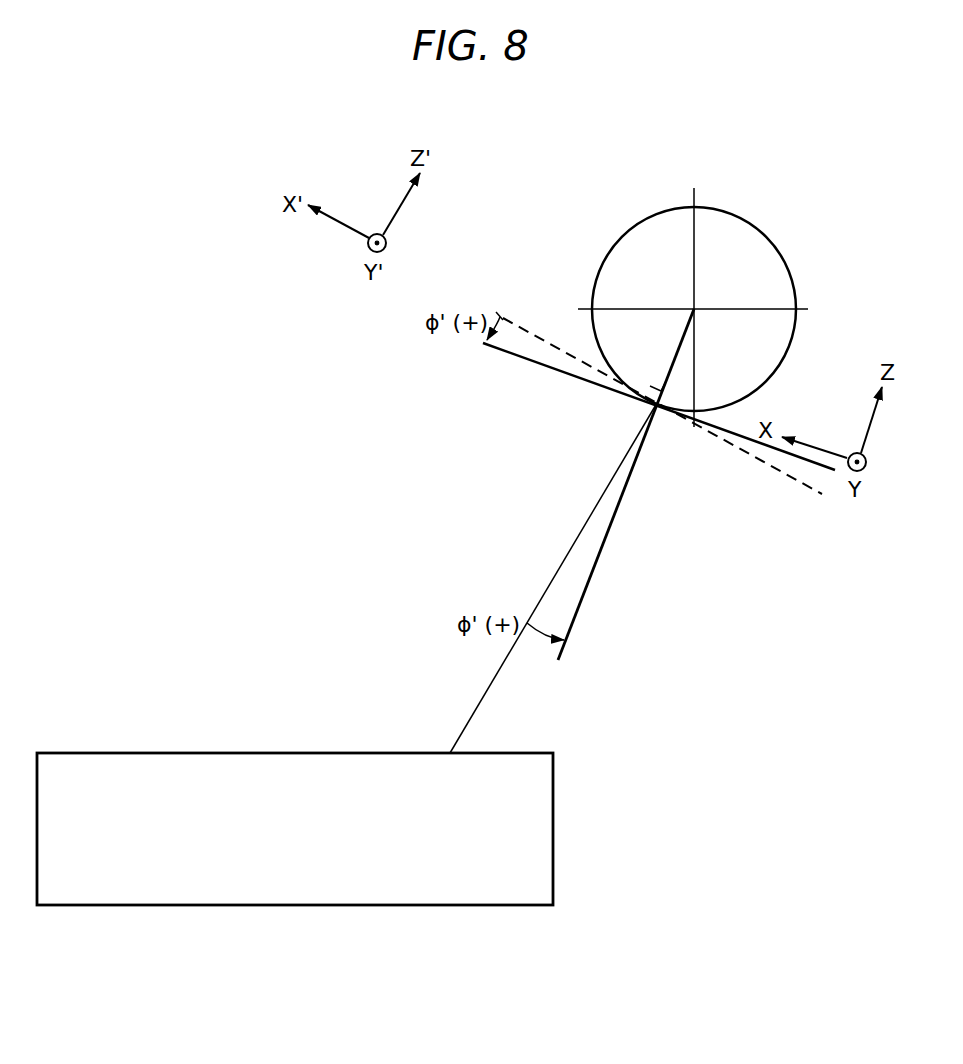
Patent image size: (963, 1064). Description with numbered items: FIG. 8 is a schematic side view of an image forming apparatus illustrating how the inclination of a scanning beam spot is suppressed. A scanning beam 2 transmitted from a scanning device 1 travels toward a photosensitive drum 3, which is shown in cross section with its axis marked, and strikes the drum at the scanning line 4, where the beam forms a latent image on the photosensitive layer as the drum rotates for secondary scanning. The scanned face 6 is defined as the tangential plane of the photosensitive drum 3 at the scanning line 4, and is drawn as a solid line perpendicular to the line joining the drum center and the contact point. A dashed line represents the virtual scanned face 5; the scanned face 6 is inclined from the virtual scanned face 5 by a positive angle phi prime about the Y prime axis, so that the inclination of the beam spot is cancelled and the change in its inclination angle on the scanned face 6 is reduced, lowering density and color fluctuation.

The scanning device 1 is at (553, 832).
The scanning beam 2 is at (577, 537).
The photosensitive drum 3 is at (763, 229).
The scanning line 4 is at (660, 406).
The virtual scanned face 5 is at (517, 323).
The scanned face 6 is at (530, 360).